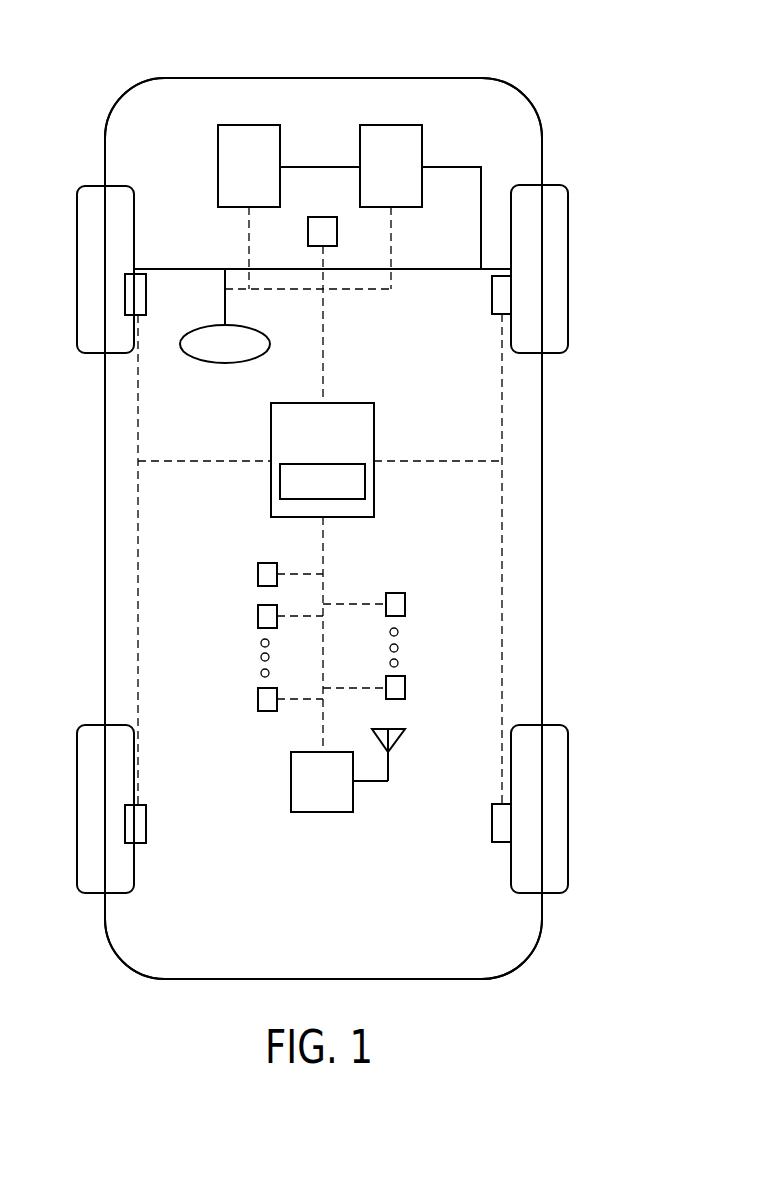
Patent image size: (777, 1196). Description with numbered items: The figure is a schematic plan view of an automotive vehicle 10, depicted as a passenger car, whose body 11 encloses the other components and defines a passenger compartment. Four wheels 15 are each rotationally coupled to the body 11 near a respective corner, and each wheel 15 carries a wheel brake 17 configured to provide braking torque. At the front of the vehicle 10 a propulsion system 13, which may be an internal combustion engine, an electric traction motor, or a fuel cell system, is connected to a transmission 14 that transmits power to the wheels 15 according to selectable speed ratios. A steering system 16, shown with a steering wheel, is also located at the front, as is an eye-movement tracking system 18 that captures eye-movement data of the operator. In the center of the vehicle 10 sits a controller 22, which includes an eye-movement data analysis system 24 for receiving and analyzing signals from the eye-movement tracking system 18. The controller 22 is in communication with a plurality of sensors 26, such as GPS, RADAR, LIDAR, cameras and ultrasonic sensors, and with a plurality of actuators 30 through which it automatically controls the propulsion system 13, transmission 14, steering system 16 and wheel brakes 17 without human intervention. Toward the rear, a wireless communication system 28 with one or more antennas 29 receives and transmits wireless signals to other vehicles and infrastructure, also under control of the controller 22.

The vehicle 10 is at (93, 92).
The body 11 is at (542, 498).
The propulsion system 13 is at (280, 152).
The transmission 14 is at (422, 143).
The wheels 15 is at (130, 237).
The steering system 16 is at (265, 334).
The wheel brakes 17 is at (135, 308).
The eye-movement tracking system 18 is at (337, 222).
The controller 22 is at (374, 424).
The eye-movement data analysis system 24 is at (365, 485).
The sensors 26 is at (258, 575).
The wireless communication system 28 is at (315, 812).
The antennas 29 is at (388, 770).
The actuators 30 is at (405, 604).